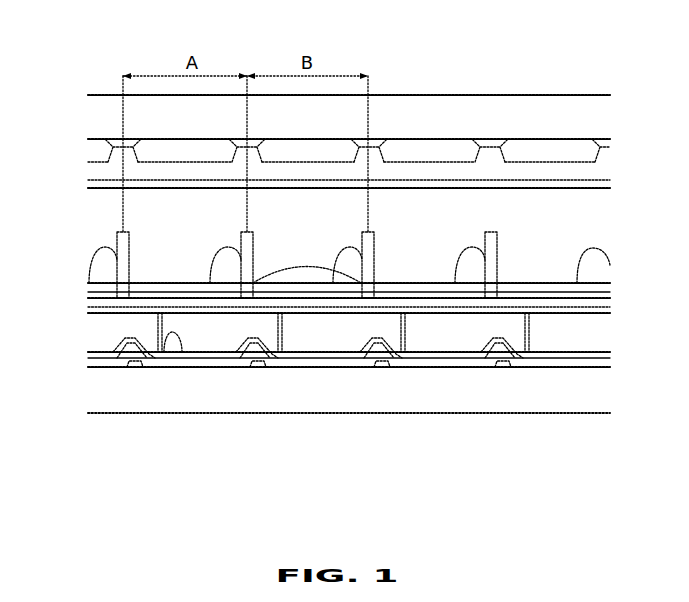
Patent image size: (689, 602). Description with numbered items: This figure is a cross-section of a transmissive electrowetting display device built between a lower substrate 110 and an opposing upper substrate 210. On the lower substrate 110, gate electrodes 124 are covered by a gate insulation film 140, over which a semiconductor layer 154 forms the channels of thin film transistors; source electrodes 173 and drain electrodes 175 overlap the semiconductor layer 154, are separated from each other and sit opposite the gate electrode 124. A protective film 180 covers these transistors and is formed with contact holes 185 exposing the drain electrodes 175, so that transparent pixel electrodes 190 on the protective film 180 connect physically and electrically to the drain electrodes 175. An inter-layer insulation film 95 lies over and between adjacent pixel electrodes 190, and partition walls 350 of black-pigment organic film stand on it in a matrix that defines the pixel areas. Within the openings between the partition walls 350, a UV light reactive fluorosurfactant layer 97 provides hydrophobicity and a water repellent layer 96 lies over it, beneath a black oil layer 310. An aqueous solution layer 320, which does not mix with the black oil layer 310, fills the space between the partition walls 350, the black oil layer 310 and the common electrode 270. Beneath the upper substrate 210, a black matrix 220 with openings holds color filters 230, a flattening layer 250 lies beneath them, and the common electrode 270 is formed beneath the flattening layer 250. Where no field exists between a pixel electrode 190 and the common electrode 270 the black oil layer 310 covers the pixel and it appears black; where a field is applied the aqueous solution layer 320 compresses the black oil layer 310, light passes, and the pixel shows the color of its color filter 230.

The lower substrate 110 is at (388, 400).
The gate insulation film 140 is at (307, 373).
The semiconductor layer 154 is at (152, 370).
The gate electrode 124 is at (138, 370).
The source electrode 173 is at (122, 370).
The contact hole 185 is at (170, 370).
The drain electrode 175 is at (215, 368).
The protective film 180 is at (343, 340).
The pixel electrode 190 is at (445, 313).
The inter-layer insulation film 95 is at (88, 313).
The water repellent layer 96 is at (88, 283).
The UV light reactive fluorosurfactant layer 97 is at (88, 300).
The black oil layer 310 is at (310, 266).
The partition wall 350 is at (106, 246).
The aqueous solution layer 320 is at (97, 207).
The upper substrate 210 is at (402, 110).
The black matrix 220 is at (495, 160).
The color filter 230 is at (431, 142).
The flattening layer 250 is at (540, 170).
The common electrode 270 is at (462, 182).